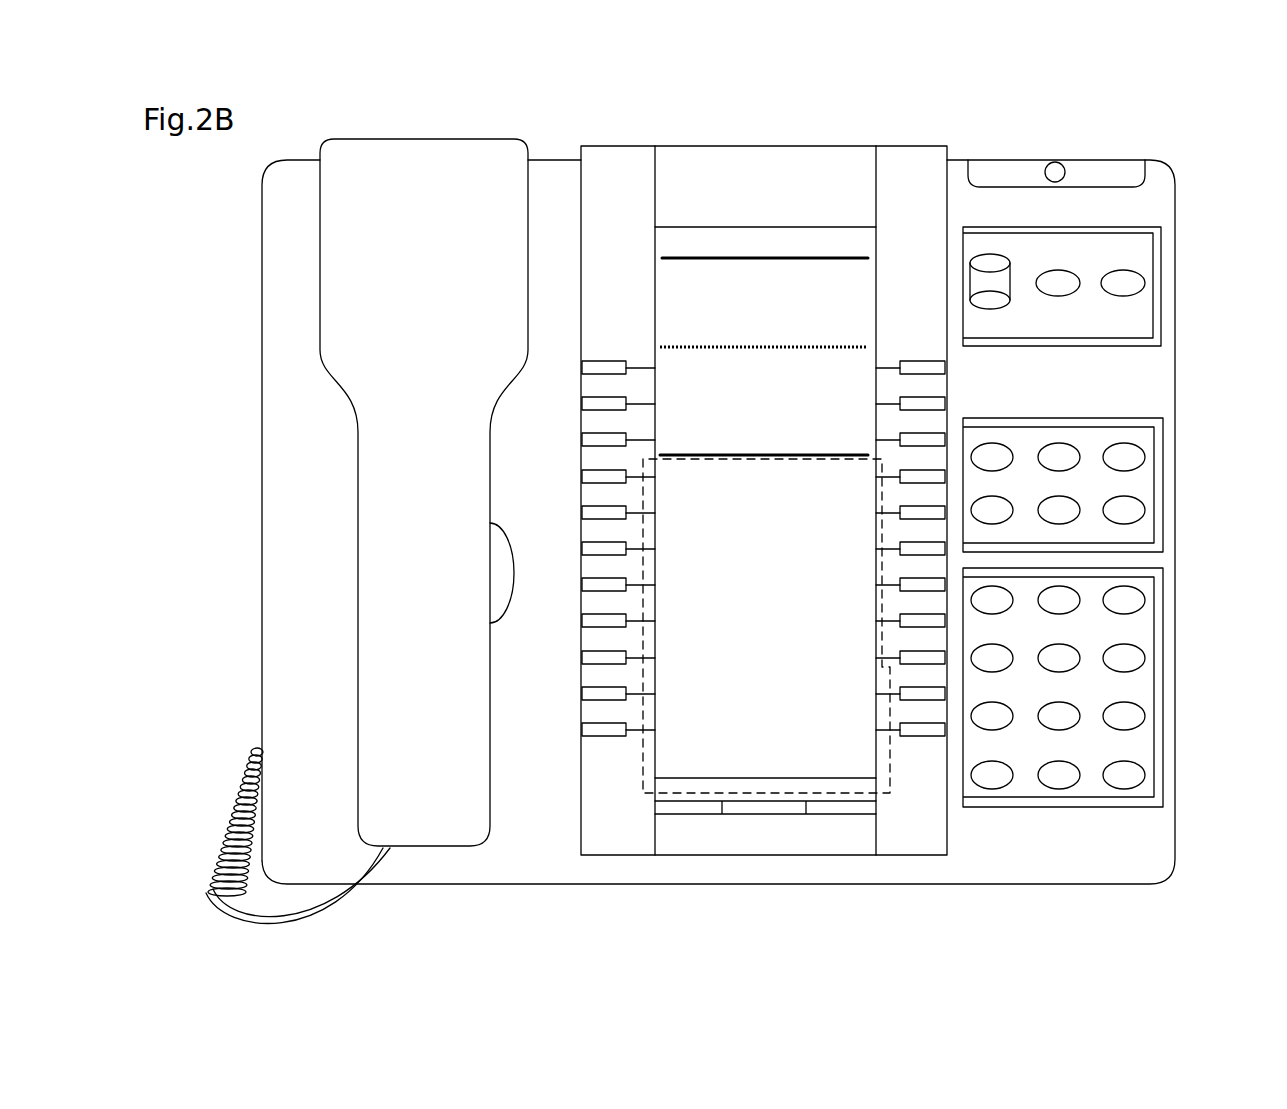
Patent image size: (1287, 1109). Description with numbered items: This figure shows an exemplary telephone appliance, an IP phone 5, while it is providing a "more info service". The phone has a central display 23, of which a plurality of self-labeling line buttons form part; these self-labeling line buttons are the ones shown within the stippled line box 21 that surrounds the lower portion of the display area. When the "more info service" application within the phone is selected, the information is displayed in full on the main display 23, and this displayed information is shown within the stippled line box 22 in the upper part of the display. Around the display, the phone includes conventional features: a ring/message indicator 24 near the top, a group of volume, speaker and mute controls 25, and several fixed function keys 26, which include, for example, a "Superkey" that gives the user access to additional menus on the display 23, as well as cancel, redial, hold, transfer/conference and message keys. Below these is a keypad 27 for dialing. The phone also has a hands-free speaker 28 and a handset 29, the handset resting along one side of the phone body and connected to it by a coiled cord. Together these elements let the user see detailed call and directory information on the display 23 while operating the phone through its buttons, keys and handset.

The IP phone 5 is at (1160, 137).
The stippled line box 21 is at (892, 773).
The stippled line box 22 is at (785, 473).
The central display 23 is at (702, 223).
The ring/message indicator 24 is at (1046, 165).
The volume, speaker and mute controls 25 is at (1158, 282).
The fixed function keys 26 is at (1158, 480).
The keypad 27 is at (1158, 677).
The hands-free speaker 28 is at (500, 593).
The handset 29 is at (423, 782).